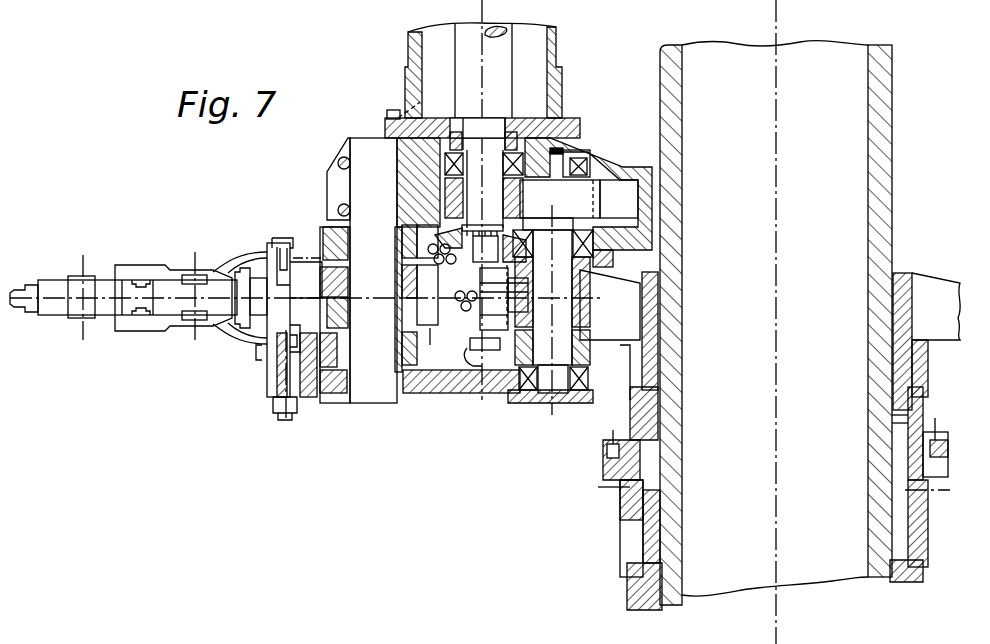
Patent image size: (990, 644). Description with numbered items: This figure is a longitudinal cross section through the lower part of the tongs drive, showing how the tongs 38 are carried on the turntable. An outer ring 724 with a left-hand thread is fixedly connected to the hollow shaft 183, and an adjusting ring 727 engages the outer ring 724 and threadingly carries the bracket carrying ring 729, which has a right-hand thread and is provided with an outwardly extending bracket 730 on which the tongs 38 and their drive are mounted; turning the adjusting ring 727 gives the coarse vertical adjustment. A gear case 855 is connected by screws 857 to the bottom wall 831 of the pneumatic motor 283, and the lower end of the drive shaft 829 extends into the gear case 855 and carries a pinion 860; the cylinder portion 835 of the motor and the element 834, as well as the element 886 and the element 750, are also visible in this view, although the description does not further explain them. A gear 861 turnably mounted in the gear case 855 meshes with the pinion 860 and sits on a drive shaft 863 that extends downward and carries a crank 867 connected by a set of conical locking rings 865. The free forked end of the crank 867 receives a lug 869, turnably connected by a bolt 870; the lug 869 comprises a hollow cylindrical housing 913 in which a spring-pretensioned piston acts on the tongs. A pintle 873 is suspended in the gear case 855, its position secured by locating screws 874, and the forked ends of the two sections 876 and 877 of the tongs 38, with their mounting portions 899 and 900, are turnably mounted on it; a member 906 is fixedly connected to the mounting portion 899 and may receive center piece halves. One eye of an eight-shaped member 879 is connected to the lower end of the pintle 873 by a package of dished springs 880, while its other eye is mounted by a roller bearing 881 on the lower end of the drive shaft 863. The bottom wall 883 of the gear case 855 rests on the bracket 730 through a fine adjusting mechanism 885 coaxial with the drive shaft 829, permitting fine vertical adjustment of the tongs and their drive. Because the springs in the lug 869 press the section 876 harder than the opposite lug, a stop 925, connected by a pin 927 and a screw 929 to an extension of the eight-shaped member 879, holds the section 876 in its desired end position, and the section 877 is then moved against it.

The tongs 38 is at (54, 264).
The member 906 is at (180, 266).
The bracket 750 is at (281, 236).
The mounting portion 899 is at (302, 248).
The section of the tongs 876 is at (320, 266).
The mounting portion 900 is at (323, 235).
The pin 927 is at (316, 428).
The stop 925 is at (306, 338).
The screw 929 is at (262, 348).
The locating screws 874 is at (350, 166).
The screws 857 is at (390, 112).
The seal 834 is at (421, 99).
The cylinder 835 is at (560, 86).
The pneumatic motor 283 is at (566, 108).
The bottom wall 831 is at (576, 132).
The gear case 855 is at (600, 154).
The pinion 860 is at (480, 190).
The drive shaft 829 is at (560, 199).
The gear 861 is at (619, 199).
The drive shaft 863 is at (610, 305).
The crank 867 is at (642, 313).
The conical locking rings 865 is at (614, 326).
The bolt 870 is at (553, 291).
The section of the tongs 877 is at (424, 312).
The gear 886 is at (461, 322).
The lug 869 is at (465, 338).
The hollow cylindrical housing 913 is at (433, 297).
The fine adjusting mechanism 885 is at (485, 360).
The bottom wall 883 is at (446, 255).
The package of dished springs 880 is at (350, 382).
The pintle 873 is at (383, 402).
The bracket 730 is at (655, 301).
The 8-shaped member 879 is at (455, 396).
The roller bearing 881 is at (545, 405).
The bracket carrying ring 729 is at (660, 343).
The adjusting ring 727 is at (632, 467).
The outer ring 724 is at (655, 527).
The hollow shaft 183 is at (655, 570).